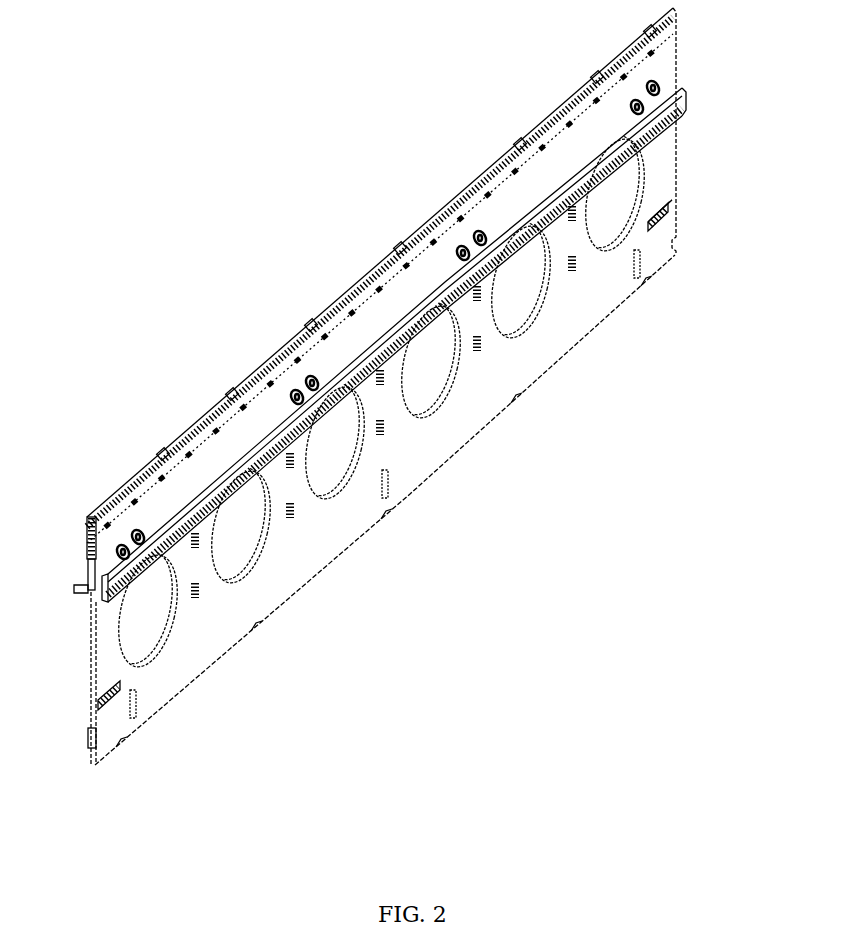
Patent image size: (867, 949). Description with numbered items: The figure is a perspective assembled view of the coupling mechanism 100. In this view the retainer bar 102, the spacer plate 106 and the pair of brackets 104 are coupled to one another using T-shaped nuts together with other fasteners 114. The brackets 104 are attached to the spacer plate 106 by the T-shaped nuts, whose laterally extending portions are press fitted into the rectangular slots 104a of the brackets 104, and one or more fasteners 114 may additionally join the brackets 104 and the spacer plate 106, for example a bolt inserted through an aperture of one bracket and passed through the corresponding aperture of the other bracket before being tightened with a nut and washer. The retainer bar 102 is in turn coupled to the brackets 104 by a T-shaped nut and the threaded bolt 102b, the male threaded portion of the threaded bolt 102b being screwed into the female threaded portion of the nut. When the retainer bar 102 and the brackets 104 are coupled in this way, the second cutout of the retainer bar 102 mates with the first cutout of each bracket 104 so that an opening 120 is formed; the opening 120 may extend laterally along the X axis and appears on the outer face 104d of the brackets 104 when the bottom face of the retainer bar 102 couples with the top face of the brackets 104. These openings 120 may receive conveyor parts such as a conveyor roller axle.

The coupling mechanism 100 is at (281, 80).
The retainer bar 102 is at (322, 308).
The threaded bolt 102b is at (403, 242).
The brackets 104 is at (335, 352).
The rectangular slots 104a is at (172, 553).
The outer face 104d is at (187, 485).
The spacer plate 106 is at (323, 546).
The fasteners 114 is at (133, 583).
The opening 120 is at (222, 440).